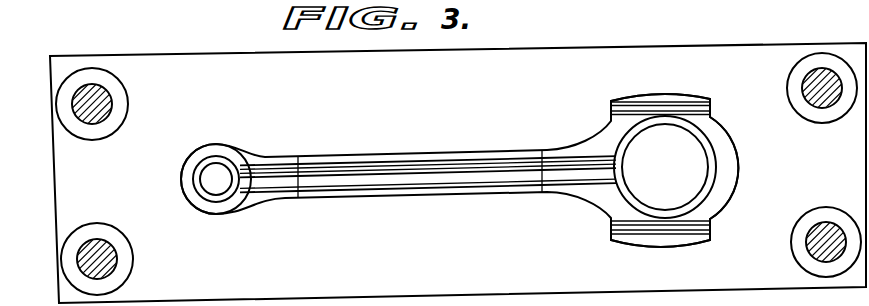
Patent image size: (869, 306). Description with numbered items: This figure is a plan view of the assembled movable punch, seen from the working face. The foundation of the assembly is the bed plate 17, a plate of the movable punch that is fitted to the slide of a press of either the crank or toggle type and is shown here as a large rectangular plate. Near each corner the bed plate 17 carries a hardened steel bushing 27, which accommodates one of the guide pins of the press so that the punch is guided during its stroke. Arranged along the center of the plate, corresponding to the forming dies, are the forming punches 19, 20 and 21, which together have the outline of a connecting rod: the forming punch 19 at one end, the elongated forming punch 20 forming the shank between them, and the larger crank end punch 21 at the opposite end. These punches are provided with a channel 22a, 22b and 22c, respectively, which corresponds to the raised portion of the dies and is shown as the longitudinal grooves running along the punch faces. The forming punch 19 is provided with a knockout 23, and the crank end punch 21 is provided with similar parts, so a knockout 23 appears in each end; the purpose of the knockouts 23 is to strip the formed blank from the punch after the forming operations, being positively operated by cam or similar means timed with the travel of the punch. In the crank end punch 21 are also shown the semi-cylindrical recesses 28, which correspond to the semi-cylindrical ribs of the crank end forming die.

The bed plate 17 is at (458, 173).
The forming punch 19 is at (228, 157).
The forming punch 20 is at (402, 158).
The crank end punch 21 is at (728, 142).
The channel 22a is at (277, 181).
The channel 22b is at (418, 177).
The channel 22c is at (583, 172).
The knockout 23 is at (202, 179).
The hardened steel bushing 27 is at (66, 106).
The semi-cylindrical recess 28 is at (705, 110).